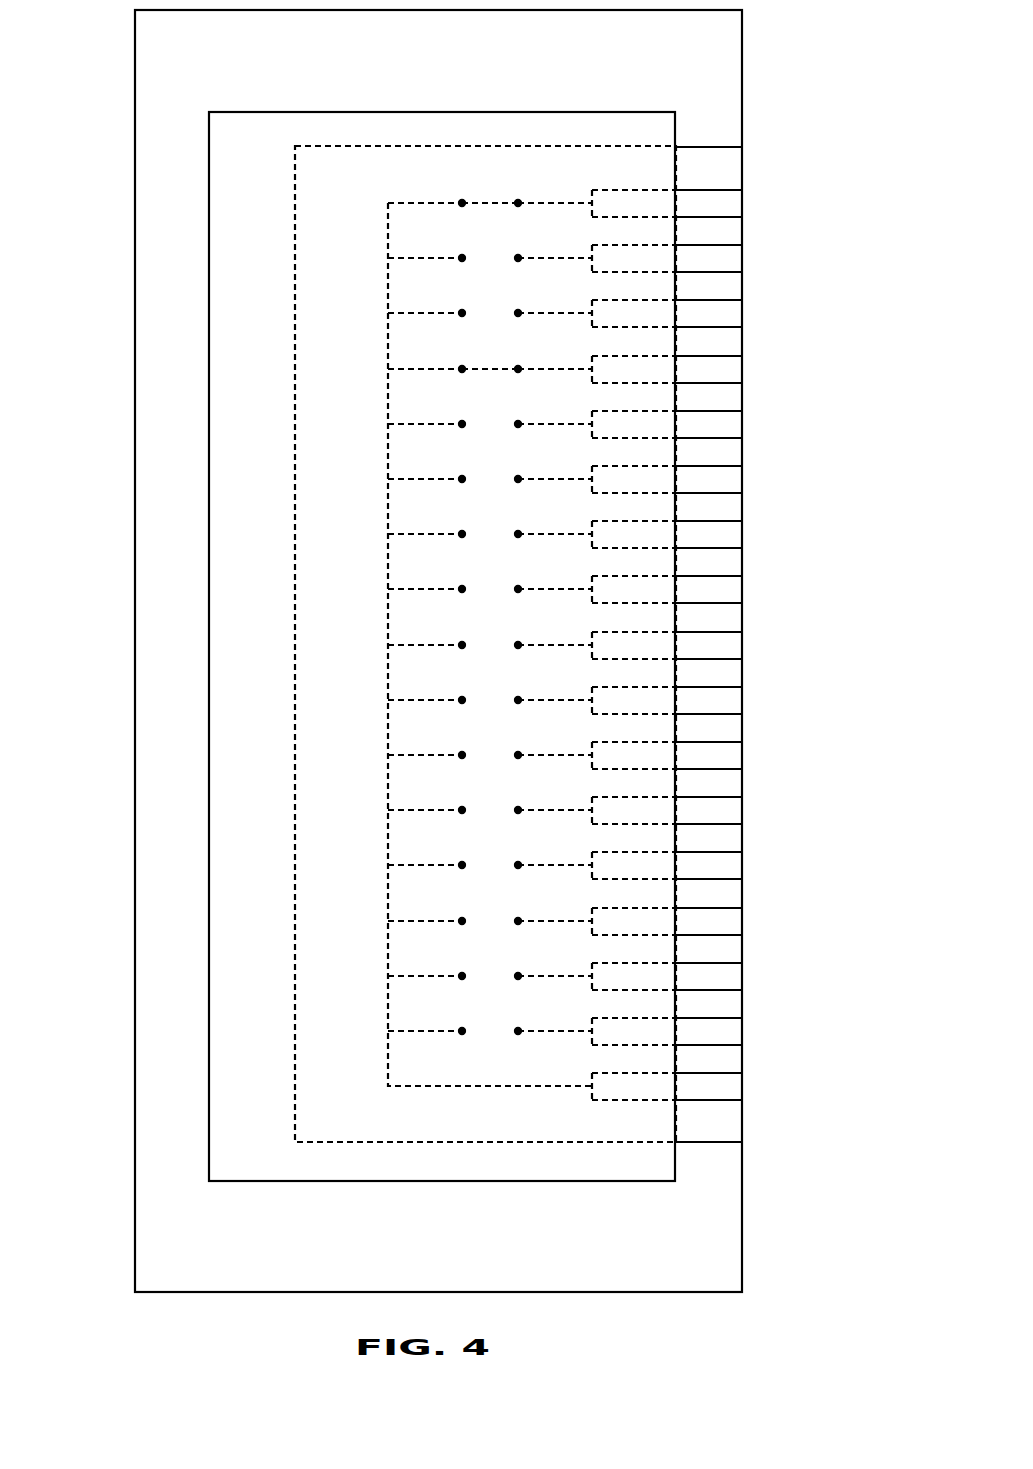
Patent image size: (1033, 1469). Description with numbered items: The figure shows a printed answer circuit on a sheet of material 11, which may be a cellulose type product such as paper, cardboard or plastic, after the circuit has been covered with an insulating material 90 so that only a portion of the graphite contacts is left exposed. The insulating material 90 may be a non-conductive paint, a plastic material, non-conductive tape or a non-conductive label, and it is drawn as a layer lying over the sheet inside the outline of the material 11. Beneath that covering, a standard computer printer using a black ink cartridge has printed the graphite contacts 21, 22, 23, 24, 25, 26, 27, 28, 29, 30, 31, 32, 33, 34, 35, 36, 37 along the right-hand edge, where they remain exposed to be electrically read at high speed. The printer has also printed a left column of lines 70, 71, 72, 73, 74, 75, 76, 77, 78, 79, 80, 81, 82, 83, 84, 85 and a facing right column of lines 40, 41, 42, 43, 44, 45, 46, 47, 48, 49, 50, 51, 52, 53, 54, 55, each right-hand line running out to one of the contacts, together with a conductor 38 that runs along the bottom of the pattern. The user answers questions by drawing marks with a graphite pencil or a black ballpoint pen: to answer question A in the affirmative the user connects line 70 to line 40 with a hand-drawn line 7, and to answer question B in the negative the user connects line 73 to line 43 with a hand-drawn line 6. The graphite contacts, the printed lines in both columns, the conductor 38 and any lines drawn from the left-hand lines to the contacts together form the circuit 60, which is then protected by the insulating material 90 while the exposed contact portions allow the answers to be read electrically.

The material 11 is at (162, 284).
The insulating material 90 is at (600, 112).
The circuit 60 is at (712, 140).
The line 7 is at (492, 202).
The line 6 is at (518, 366).
The conductor 38 is at (505, 1088).
The line 70 is at (450, 199).
The line 71 is at (450, 254).
The line 72 is at (450, 309).
The line 73 is at (450, 365).
The line 74 is at (450, 420).
The line 75 is at (450, 475).
The line 76 is at (450, 530).
The line 77 is at (450, 585).
The line 78 is at (450, 641).
The line 79 is at (450, 696).
The line 80 is at (450, 751).
The line 81 is at (450, 806).
The line 82 is at (450, 861).
The line 83 is at (450, 917).
The line 84 is at (450, 972).
The line 85 is at (450, 1027).
The line 40 is at (570, 200).
The line 41 is at (570, 255).
The line 42 is at (570, 310).
The line 43 is at (590, 366).
The line 44 is at (570, 421).
The line 45 is at (570, 476).
The line 46 is at (570, 531).
The line 47 is at (570, 586).
The line 48 is at (570, 642).
The line 49 is at (570, 697).
The line 50 is at (570, 752).
The line 51 is at (570, 807).
The line 52 is at (570, 862).
The line 53 is at (570, 918).
The line 54 is at (570, 973).
The line 55 is at (570, 1028).
The graphite contact 21 is at (707, 1073).
The graphite contact 22 is at (707, 1018).
The graphite contact 23 is at (707, 963).
The graphite contact 24 is at (707, 908).
The graphite contact 25 is at (707, 852).
The graphite contact 26 is at (707, 797).
The graphite contact 27 is at (707, 742).
The graphite contact 28 is at (707, 687).
The graphite contact 29 is at (707, 632).
The graphite contact 30 is at (707, 576).
The graphite contact 31 is at (707, 521).
The graphite contact 32 is at (707, 466).
The graphite contact 33 is at (707, 411).
The graphite contact 34 is at (707, 356).
The graphite contact 35 is at (707, 300).
The graphite contact 36 is at (707, 245).
The graphite contact 37 is at (707, 190).